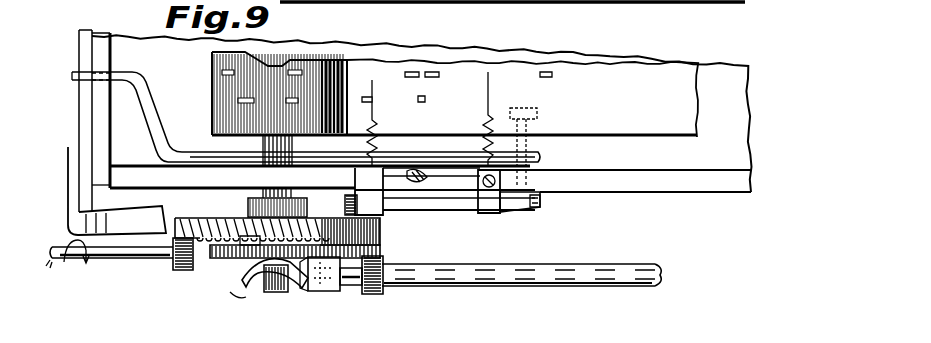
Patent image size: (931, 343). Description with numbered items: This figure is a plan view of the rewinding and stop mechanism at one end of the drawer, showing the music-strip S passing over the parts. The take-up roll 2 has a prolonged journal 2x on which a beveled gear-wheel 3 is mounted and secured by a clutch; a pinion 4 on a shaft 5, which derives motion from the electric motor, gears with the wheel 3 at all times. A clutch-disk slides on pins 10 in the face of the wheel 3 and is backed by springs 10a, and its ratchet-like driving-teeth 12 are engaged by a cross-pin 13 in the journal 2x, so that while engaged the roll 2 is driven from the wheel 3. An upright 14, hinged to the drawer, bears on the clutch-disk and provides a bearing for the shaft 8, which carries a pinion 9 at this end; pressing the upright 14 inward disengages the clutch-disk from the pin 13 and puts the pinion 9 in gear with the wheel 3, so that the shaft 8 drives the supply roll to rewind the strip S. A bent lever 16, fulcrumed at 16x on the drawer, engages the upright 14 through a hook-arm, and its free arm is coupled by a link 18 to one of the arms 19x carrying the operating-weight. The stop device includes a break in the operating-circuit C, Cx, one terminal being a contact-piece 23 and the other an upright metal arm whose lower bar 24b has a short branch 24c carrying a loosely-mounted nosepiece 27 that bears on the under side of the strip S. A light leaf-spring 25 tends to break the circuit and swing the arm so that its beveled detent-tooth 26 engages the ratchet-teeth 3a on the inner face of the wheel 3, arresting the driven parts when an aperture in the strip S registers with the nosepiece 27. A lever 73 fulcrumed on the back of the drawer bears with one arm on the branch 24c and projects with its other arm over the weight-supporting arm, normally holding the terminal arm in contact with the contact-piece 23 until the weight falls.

The arm 19x is at (78, 42).
The lever 73 is at (150, 118).
The roll 2 is at (211, 120).
The prolonged journal 2x is at (274, 293).
The link 18 is at (68, 156).
The lever 16 is at (128, 212).
The fulcrum 16x is at (431, 179).
The ratchet-teeth 3a is at (355, 193).
The beveled gear-wheel 3 is at (380, 229).
The pinion 4 is at (182, 272).
The shaft 5 is at (143, 262).
The pins 10 is at (208, 240).
The springs 10a is at (218, 245).
The driving-teeth 12 is at (258, 282).
The cross-pin 13 is at (244, 284).
The upright 14 is at (348, 288).
The pinion 9 is at (378, 290).
The shaft 8 is at (588, 266).
The contact-piece 23 is at (388, 168).
The detent-tooth 26 is at (400, 212).
The lower bar 24b is at (450, 205).
The branch 24c is at (560, 172).
The leaf-spring 25 is at (495, 214).
The nosepiece 27 is at (535, 110).
The operating-circuit C is at (381, 84).
The operating-circuit Cx is at (494, 84).
The music-strip S is at (422, 113).